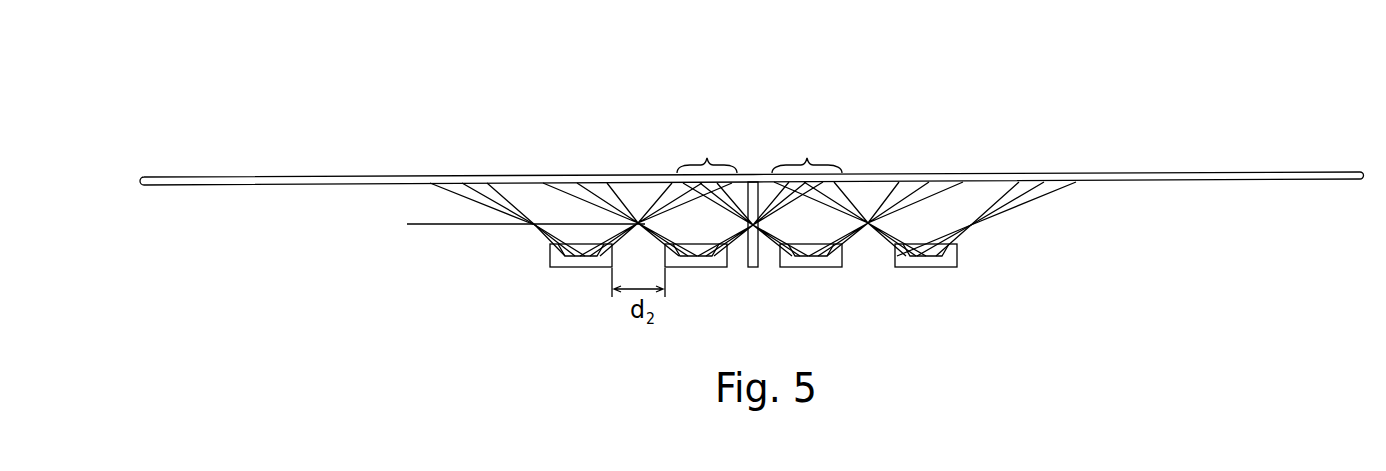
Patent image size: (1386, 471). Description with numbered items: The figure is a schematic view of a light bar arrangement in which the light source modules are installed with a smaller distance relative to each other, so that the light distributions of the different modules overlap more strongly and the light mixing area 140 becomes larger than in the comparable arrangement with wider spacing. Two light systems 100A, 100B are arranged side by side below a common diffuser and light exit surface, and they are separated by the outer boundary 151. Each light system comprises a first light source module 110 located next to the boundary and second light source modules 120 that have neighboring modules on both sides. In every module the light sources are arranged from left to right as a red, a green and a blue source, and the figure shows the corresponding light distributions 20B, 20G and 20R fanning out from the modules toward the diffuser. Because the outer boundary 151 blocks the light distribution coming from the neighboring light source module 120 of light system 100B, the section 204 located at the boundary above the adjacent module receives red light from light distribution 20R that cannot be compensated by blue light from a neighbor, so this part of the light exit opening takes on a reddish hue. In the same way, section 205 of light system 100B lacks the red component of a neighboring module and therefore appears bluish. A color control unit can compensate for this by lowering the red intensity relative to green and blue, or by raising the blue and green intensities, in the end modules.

The light system 100A is at (258, 162).
The light system 100B is at (927, 160).
The outer boundary 151 is at (763, 183).
The light mixing area 140 is at (371, 207).
The section 204 is at (707, 150).
The section 205 is at (807, 150).
The light distribution 20B is at (470, 203).
The light distribution 20G is at (483, 190).
The light distribution 20R is at (503, 190).
The first light source module 110 is at (598, 268).
The second light source module 120 is at (693, 268).